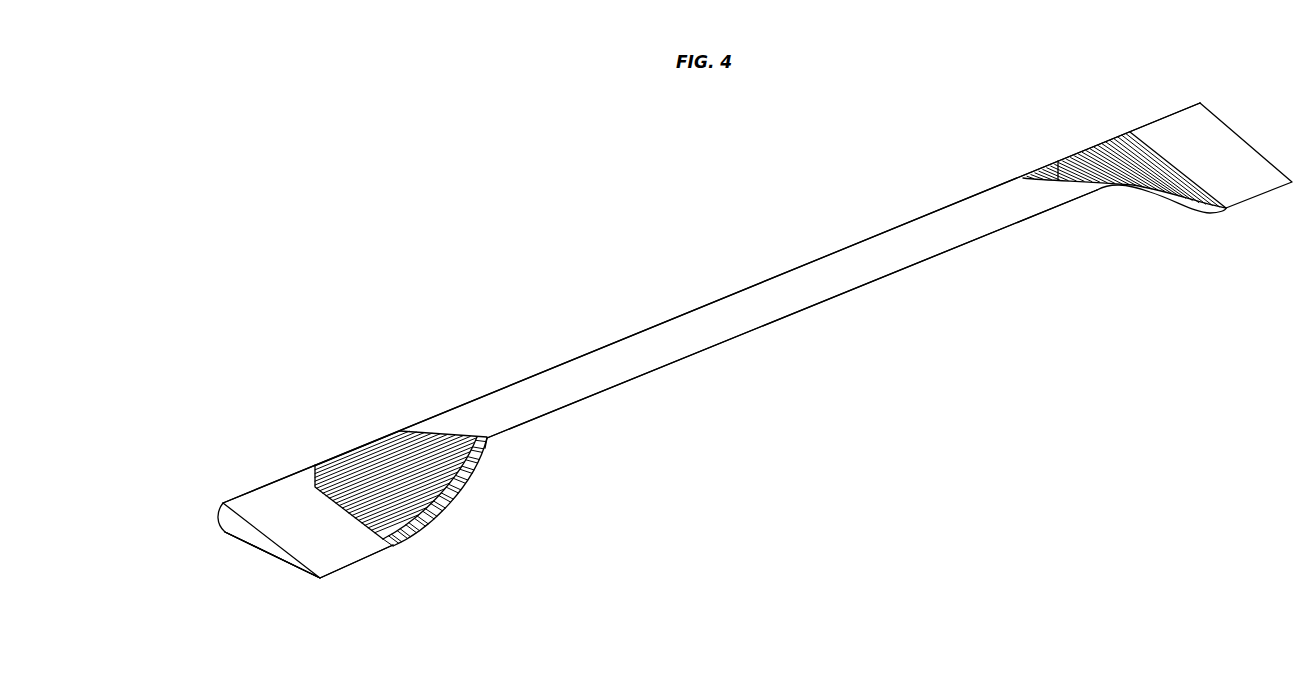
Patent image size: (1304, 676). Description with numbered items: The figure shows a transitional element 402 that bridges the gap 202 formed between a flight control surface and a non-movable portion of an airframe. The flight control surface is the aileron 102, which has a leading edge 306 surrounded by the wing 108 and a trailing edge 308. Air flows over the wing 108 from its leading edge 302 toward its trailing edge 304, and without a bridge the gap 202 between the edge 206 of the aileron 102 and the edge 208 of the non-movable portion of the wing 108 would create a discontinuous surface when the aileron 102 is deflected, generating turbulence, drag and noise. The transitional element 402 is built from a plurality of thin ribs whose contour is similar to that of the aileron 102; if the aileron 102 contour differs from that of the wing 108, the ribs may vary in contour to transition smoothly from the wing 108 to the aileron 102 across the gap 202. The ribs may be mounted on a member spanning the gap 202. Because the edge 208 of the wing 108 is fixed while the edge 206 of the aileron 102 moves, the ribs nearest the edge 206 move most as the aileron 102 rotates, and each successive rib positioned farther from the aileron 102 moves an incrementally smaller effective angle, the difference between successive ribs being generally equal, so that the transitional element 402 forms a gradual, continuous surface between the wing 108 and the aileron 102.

The aileron 102 is at (773, 297).
The wing 108 is at (590, 206).
The gap 202 is at (413, 570).
The edge of aileron 206 is at (447, 436).
The edge of non-movable portion of wing 208 is at (313, 467).
The leading edge of wing 302 is at (222, 505).
The trailing edge of wing 304 is at (353, 564).
The leading edge of aileron 306 is at (660, 323).
The trailing edge of aileron 308 is at (743, 335).
The transitional element 402 is at (382, 465).